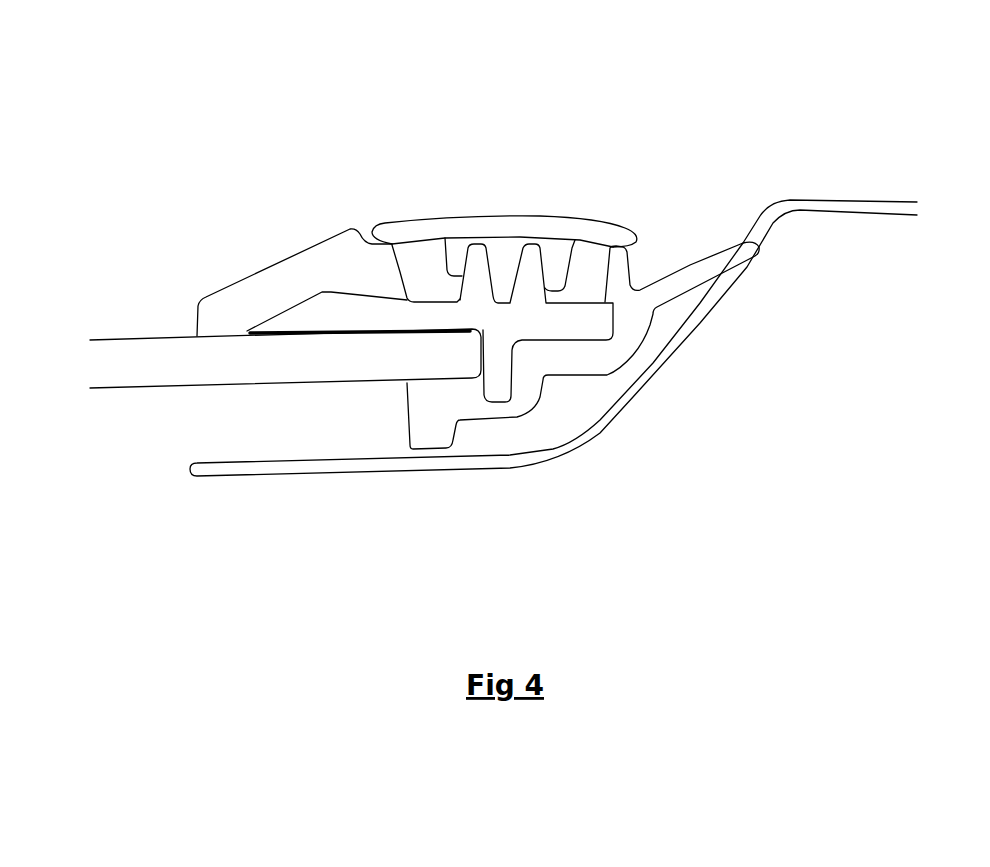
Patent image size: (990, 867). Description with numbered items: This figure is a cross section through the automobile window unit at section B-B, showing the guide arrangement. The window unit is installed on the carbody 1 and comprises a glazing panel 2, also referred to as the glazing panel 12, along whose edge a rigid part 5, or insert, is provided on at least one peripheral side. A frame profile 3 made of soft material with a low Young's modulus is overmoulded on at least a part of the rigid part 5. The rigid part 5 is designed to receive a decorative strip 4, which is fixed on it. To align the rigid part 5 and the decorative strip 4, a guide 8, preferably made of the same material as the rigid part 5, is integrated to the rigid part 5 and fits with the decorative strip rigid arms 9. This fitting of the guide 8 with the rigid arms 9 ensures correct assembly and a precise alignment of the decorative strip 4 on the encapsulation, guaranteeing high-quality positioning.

The carbody 1 is at (850, 205).
The glazing panel 2 is at (148, 358).
The frame profile 3 is at (247, 298).
The decorative strip 4 is at (425, 230).
The rigid part 5 is at (328, 315).
The guide 8 is at (473, 275).
The decorative strip rigid arms 9 is at (447, 280).
The glazing panel 12 is at (380, 357).